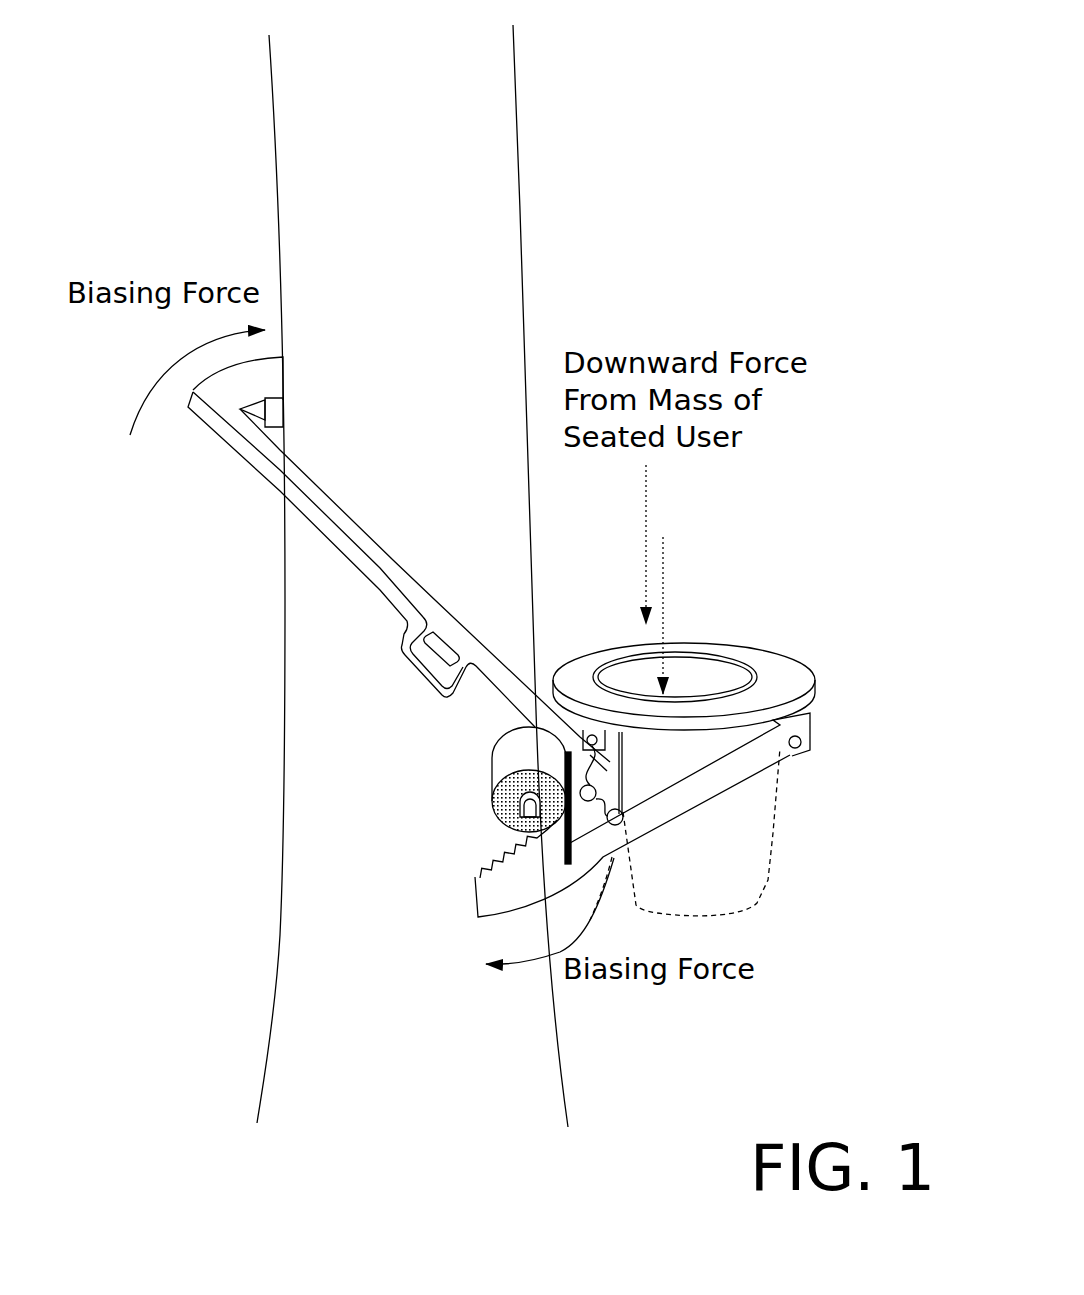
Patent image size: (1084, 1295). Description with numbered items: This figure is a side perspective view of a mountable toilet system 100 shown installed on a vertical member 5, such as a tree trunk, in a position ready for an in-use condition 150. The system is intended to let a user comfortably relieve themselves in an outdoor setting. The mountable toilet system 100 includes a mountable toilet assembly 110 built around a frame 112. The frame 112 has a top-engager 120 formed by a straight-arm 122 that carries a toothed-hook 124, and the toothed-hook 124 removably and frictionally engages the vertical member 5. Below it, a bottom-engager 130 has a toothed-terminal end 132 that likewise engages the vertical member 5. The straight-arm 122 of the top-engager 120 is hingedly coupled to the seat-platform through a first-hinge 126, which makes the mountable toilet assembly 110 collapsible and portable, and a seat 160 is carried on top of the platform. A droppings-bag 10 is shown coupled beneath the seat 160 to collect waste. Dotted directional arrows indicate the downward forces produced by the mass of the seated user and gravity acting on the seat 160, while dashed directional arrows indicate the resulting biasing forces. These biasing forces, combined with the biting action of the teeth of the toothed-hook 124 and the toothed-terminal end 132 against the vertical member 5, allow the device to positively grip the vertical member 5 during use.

The vertical member 5 is at (283, 612).
The droppings-bag 10 is at (778, 835).
The mountable toilet system 100 is at (687, 97).
The mountable toilet assembly 110 is at (738, 623).
The frame 112 is at (818, 720).
The top-engager 120 is at (277, 417).
The straight-arm 122 is at (268, 480).
The toothed-hook 124 is at (258, 390).
The first-hinge 126 is at (602, 775).
The bottom-engager 130 is at (520, 862).
The toothed-terminal end 132 is at (480, 873).
The in-use condition 150 is at (713, 147).
The seat 160 is at (776, 684).